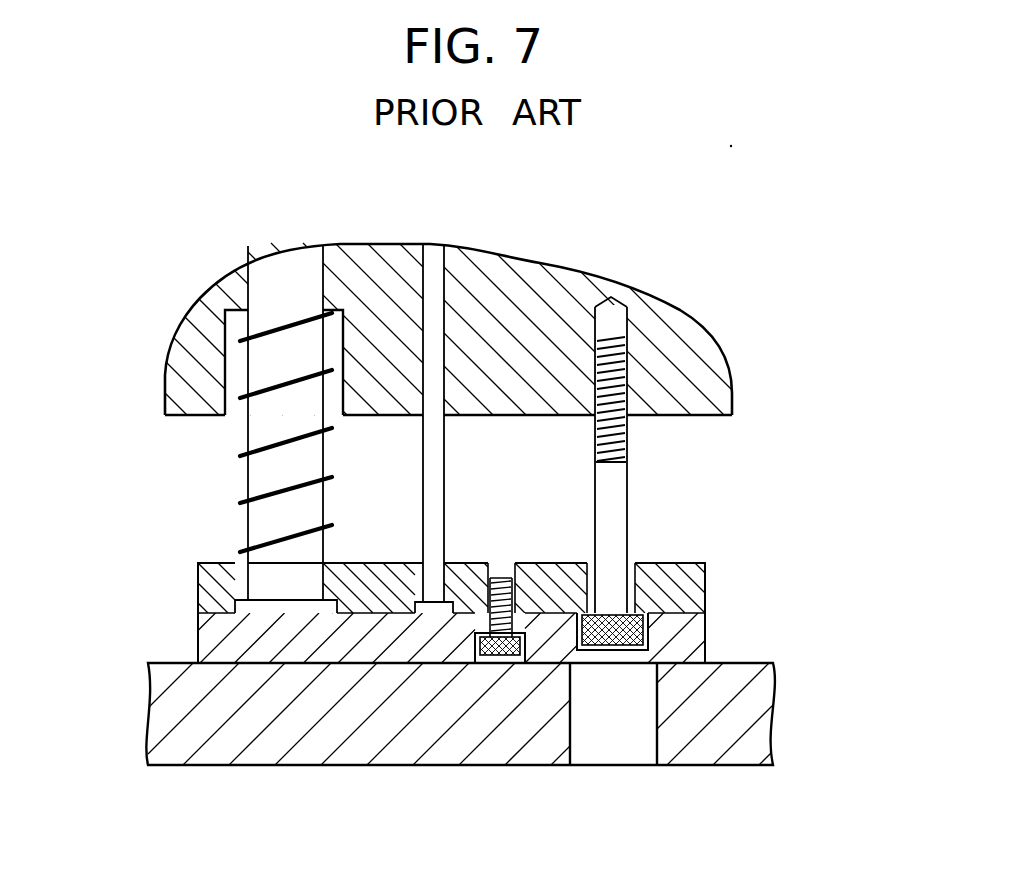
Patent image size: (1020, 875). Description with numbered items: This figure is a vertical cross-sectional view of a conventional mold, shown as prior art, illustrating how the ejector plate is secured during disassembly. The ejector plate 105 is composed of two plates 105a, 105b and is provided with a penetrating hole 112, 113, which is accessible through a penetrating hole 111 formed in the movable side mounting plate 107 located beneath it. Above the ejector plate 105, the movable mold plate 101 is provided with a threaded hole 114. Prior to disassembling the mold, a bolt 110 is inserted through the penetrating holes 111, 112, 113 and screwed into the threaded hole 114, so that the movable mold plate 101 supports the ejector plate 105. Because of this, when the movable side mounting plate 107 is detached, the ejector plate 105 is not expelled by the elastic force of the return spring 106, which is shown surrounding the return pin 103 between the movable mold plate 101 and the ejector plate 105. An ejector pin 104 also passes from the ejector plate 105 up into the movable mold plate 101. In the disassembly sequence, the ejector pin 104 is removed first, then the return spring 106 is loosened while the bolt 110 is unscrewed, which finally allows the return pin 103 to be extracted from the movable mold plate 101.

The movable mold plate 101 is at (583, 285).
The return pin 103 is at (288, 275).
The ejector pin 104 is at (433, 300).
The ejector plate 105 is at (457, 598).
The plate 105a is at (213, 580).
The plate 105b is at (223, 641).
The return spring 106 is at (272, 490).
The movable side mounting plate 107 is at (437, 746).
The bolt 110 is at (653, 425).
The penetrating hole 111 is at (657, 746).
The penetrating hole 112 is at (640, 690).
The penetrating hole 113 is at (630, 579).
The threaded hole 114 is at (630, 337).